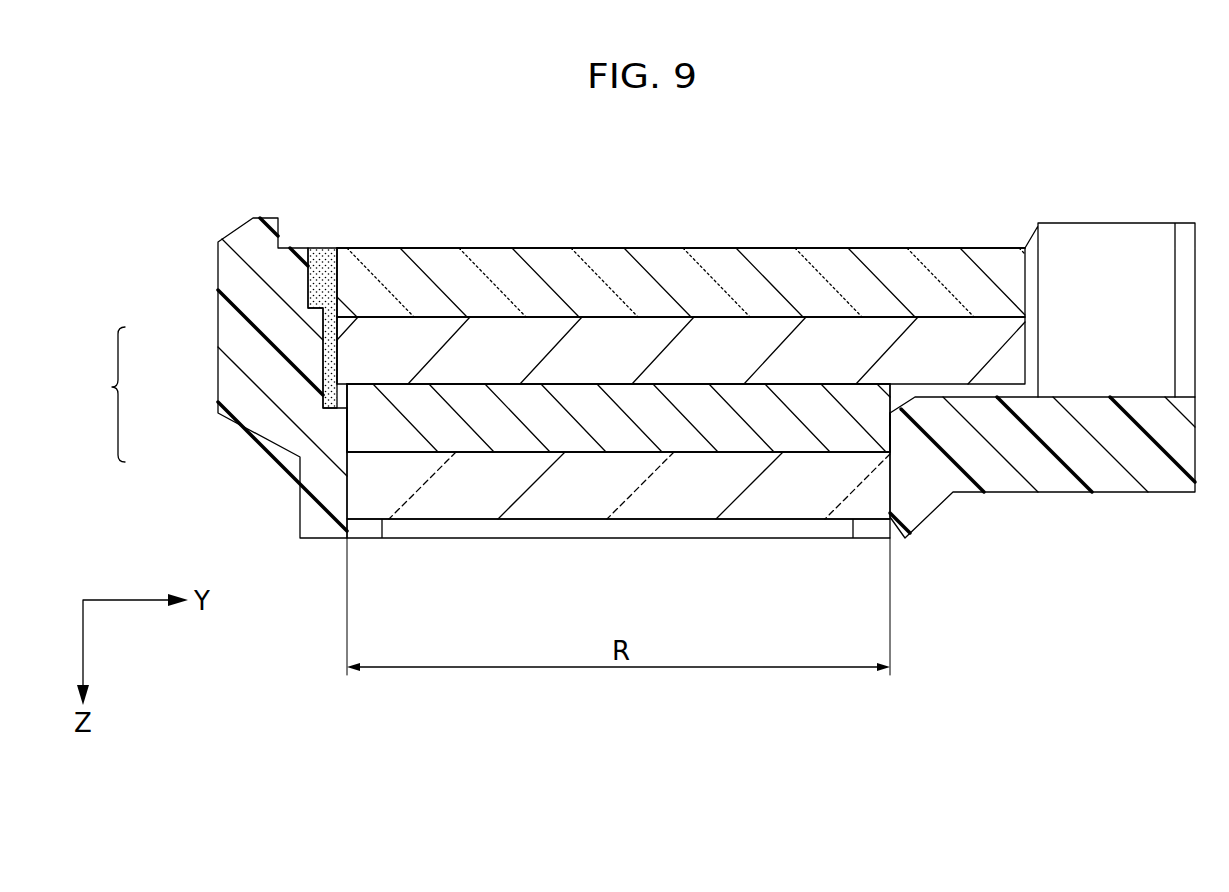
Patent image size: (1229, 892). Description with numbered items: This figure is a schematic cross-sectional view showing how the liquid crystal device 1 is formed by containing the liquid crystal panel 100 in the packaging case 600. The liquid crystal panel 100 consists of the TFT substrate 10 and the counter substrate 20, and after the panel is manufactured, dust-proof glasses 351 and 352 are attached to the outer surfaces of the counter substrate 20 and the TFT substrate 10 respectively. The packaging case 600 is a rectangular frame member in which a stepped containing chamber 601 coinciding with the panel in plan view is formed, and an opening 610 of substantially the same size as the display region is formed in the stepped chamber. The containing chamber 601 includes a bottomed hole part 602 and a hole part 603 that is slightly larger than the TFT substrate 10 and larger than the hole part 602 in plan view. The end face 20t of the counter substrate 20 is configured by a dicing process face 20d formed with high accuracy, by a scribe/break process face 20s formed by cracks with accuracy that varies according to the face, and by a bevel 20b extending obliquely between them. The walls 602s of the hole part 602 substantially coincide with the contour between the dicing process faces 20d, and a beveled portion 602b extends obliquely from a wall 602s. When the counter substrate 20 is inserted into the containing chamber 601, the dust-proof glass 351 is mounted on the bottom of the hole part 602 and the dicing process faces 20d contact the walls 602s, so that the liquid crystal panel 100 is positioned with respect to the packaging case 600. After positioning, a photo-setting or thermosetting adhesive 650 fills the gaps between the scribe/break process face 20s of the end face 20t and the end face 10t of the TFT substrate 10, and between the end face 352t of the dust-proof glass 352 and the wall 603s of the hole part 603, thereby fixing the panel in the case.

The liquid crystal device 1 is at (1163, 204).
The TFT substrate 10 is at (536, 345).
The end face of TFT substrate 10t is at (315, 356).
The counter substrate 20 is at (585, 430).
The scribe/break process face 20s is at (920, 384).
The bevel 20b is at (314, 418).
The dicing process face 20d is at (320, 440).
The end face of counter substrate 20t is at (101, 394).
The liquid crystal panel 100 is at (854, 231).
The dust-proof glass 351 is at (650, 497).
The dust-proof glass 352 is at (664, 262).
The end face of dust-proof glass 352t is at (336, 271).
The packaging case 600 is at (1103, 470).
The containing chamber 601 is at (714, 430).
The hole part 602 is at (510, 475).
The wall of hole part 602s is at (365, 428).
The beveled portion of hole part 602b is at (347, 397).
The hole part 603 is at (768, 302).
The wall of hole part 603s is at (350, 322).
The opening 610 is at (693, 541).
The adhesive 650 is at (318, 248).